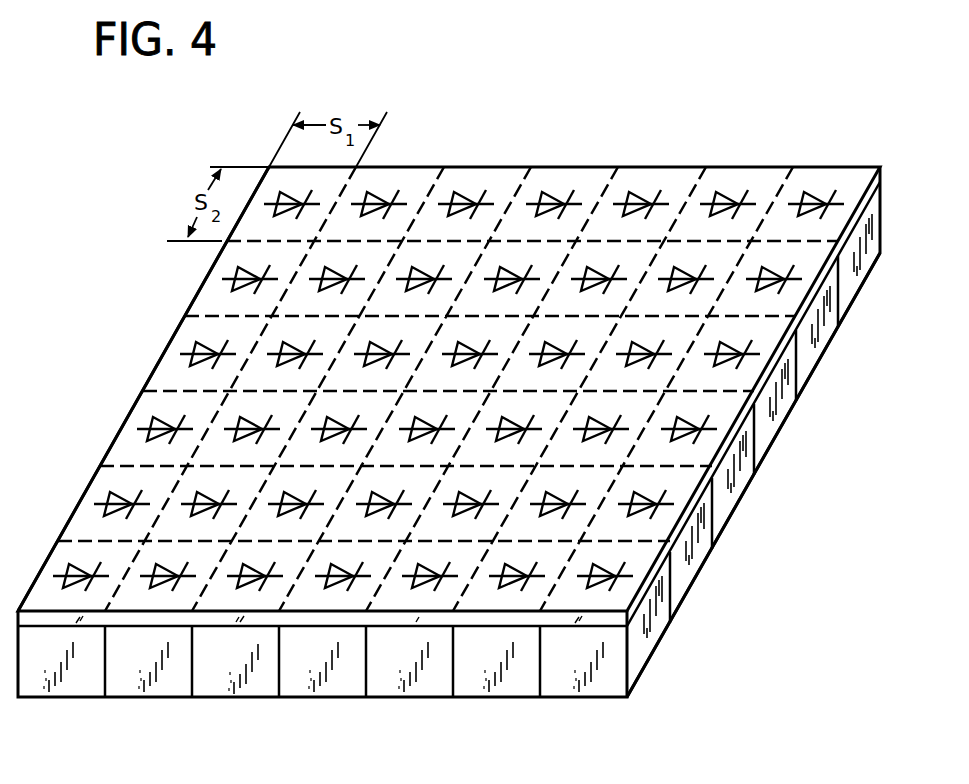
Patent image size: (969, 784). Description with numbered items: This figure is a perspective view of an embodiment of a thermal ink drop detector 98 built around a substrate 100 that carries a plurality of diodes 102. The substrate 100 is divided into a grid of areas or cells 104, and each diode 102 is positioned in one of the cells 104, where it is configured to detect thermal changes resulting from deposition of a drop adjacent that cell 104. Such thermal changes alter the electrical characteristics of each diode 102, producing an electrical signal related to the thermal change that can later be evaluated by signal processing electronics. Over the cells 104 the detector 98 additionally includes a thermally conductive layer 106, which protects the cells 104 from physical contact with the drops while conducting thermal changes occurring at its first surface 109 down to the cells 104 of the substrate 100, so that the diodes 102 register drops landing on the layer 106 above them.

The thermal ink drop detector 98 is at (760, 121).
The substrate 100 is at (746, 488).
The diodes 102 is at (555, 190).
The area or cell 104 is at (411, 187).
The thermally conductive layer 106 is at (557, 620).
The first surface 109 is at (43, 590).